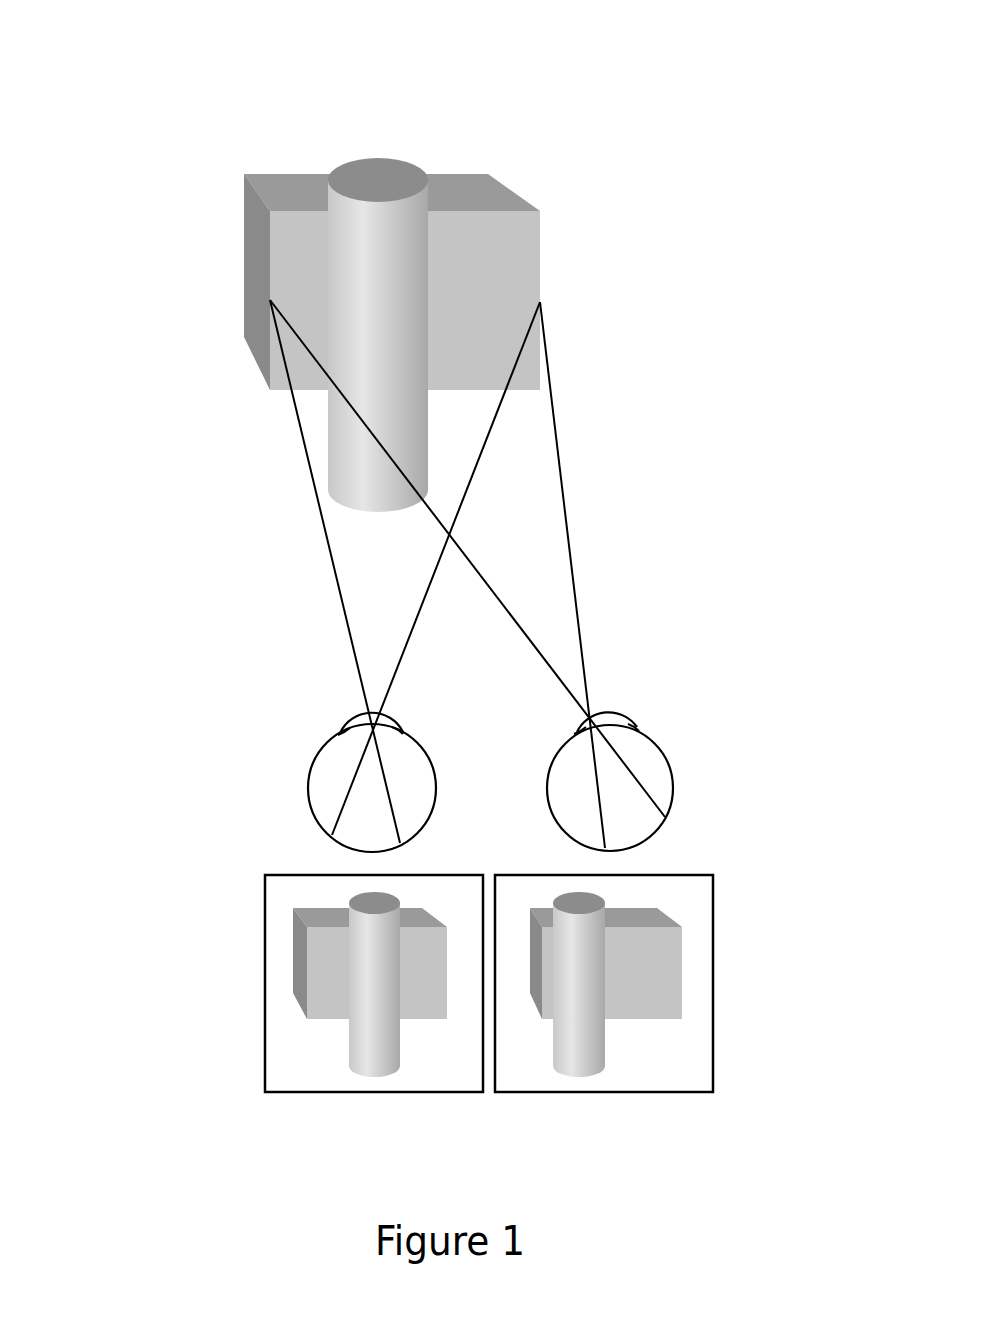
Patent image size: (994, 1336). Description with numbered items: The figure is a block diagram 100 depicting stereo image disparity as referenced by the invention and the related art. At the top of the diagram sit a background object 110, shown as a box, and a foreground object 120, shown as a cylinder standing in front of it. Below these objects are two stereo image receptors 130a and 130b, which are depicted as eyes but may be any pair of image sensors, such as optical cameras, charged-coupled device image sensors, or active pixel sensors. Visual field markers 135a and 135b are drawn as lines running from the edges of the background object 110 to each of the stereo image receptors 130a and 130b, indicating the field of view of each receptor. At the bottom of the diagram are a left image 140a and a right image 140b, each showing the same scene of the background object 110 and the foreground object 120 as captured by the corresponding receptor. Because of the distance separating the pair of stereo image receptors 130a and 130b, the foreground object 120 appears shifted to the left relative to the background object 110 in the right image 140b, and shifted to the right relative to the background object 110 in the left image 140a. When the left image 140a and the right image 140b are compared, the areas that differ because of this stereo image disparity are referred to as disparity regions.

The stereoscopic viewing system 100 is at (128, 46).
The background object 110 is at (245, 182).
The foreground object 120 is at (345, 165).
The stereo image receptor 130a is at (318, 757).
The stereo image receptor 130b is at (650, 733).
The visual field marker 135a is at (398, 667).
The visual field marker 135b is at (547, 670).
The left image 140a is at (265, 1093).
The right image 140b is at (713, 1093).